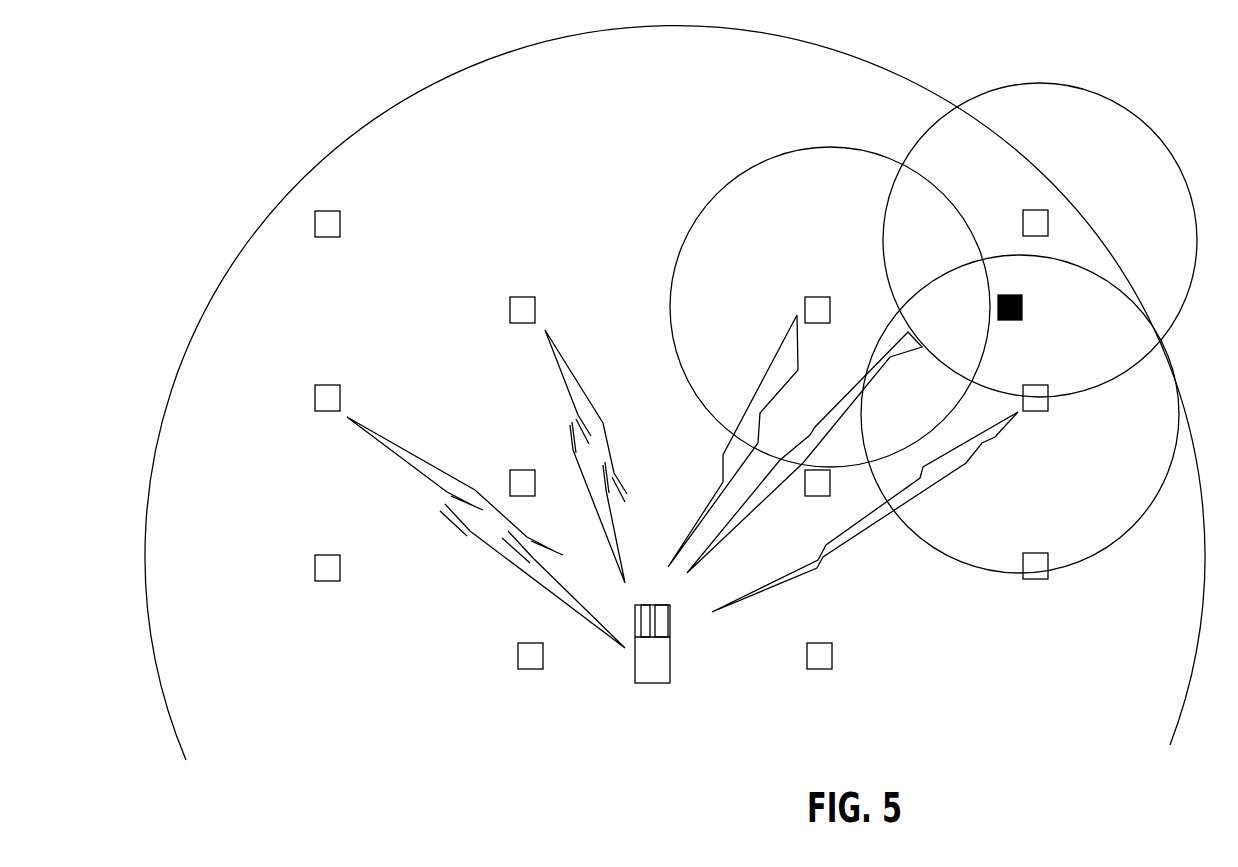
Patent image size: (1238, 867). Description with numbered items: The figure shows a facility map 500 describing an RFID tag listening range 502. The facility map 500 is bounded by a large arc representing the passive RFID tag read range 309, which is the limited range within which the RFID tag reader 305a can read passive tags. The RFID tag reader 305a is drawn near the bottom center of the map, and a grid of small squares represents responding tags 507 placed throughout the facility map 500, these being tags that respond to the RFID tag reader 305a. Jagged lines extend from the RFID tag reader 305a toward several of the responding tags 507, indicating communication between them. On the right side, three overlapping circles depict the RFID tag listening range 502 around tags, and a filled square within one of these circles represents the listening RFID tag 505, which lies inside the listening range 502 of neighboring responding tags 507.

The facility map 500 is at (284, 118).
The passive RFID tag read range 309 is at (352, 134).
The RFID tag listening range 502 is at (1076, 84).
The responding tags 507 is at (1030, 210).
The listening RFID tag 505 is at (1023, 308).
The RFID tag reader 305a is at (672, 652).